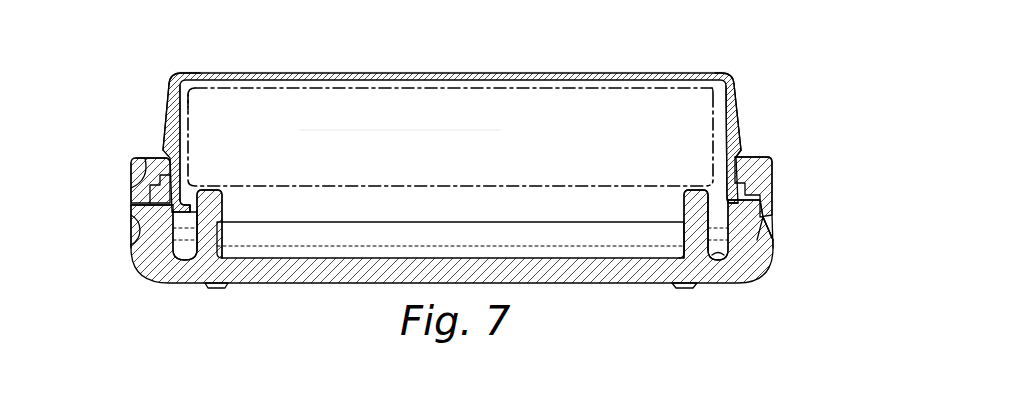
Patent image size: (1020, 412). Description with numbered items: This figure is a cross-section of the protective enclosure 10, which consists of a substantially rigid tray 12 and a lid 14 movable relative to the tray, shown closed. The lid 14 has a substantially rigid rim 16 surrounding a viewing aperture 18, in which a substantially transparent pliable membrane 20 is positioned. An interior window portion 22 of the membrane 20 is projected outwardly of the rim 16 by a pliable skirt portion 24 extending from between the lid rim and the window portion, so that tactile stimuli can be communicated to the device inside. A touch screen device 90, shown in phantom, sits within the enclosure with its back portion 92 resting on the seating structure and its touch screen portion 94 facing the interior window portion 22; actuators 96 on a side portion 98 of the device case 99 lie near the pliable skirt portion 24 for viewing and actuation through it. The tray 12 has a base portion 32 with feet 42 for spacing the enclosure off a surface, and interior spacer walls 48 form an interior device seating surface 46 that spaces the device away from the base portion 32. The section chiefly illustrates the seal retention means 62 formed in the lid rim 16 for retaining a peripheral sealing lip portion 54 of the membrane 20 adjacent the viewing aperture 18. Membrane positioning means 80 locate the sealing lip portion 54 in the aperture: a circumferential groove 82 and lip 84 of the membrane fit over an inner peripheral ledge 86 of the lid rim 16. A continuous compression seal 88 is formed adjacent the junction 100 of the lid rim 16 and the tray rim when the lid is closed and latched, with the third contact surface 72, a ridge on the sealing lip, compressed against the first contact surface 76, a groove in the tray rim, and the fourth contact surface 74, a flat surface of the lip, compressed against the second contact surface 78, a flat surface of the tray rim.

The protective enclosure 10 is at (251, 40).
The tray 12 is at (305, 283).
The lid 14 is at (131, 184).
The rim 16 is at (772, 157).
The viewing aperture 18 is at (737, 173).
The pliable membrane 20 is at (175, 79).
The interior window portion 22 is at (368, 72).
The pliable skirt portion 24 is at (166, 110).
The base portion 32 is at (393, 258).
The feet 42 is at (208, 287).
The interior device seating surface 46 is at (208, 187).
The interior spacer walls 48 is at (217, 210).
The peripheral sealing lip portion 54 is at (158, 228).
The seal retention means 62 is at (150, 165).
The third contact surface 72 is at (688, 178).
The first contact surface 76 is at (575, 0).
The fourth contact surface 74 is at (589, 177).
The second contact surface 78 is at (678, 323).
The membrane positioning means 80 is at (143, 160).
The circumferential groove 82 is at (453, 183).
The inner peripheral ledge 86 is at (735, 178).
The lip 84 is at (755, 150).
The continuous compression seal 88 is at (160, 235).
The touch screen device 90 is at (415, 144).
The back portion 92 is at (509, 190).
The touch screen portion 94 is at (455, 88).
The actuators 96 is at (186, 127).
The side portion 98 is at (727, 87).
The case 99 is at (190, 87).
The junction 100 is at (143, 222).